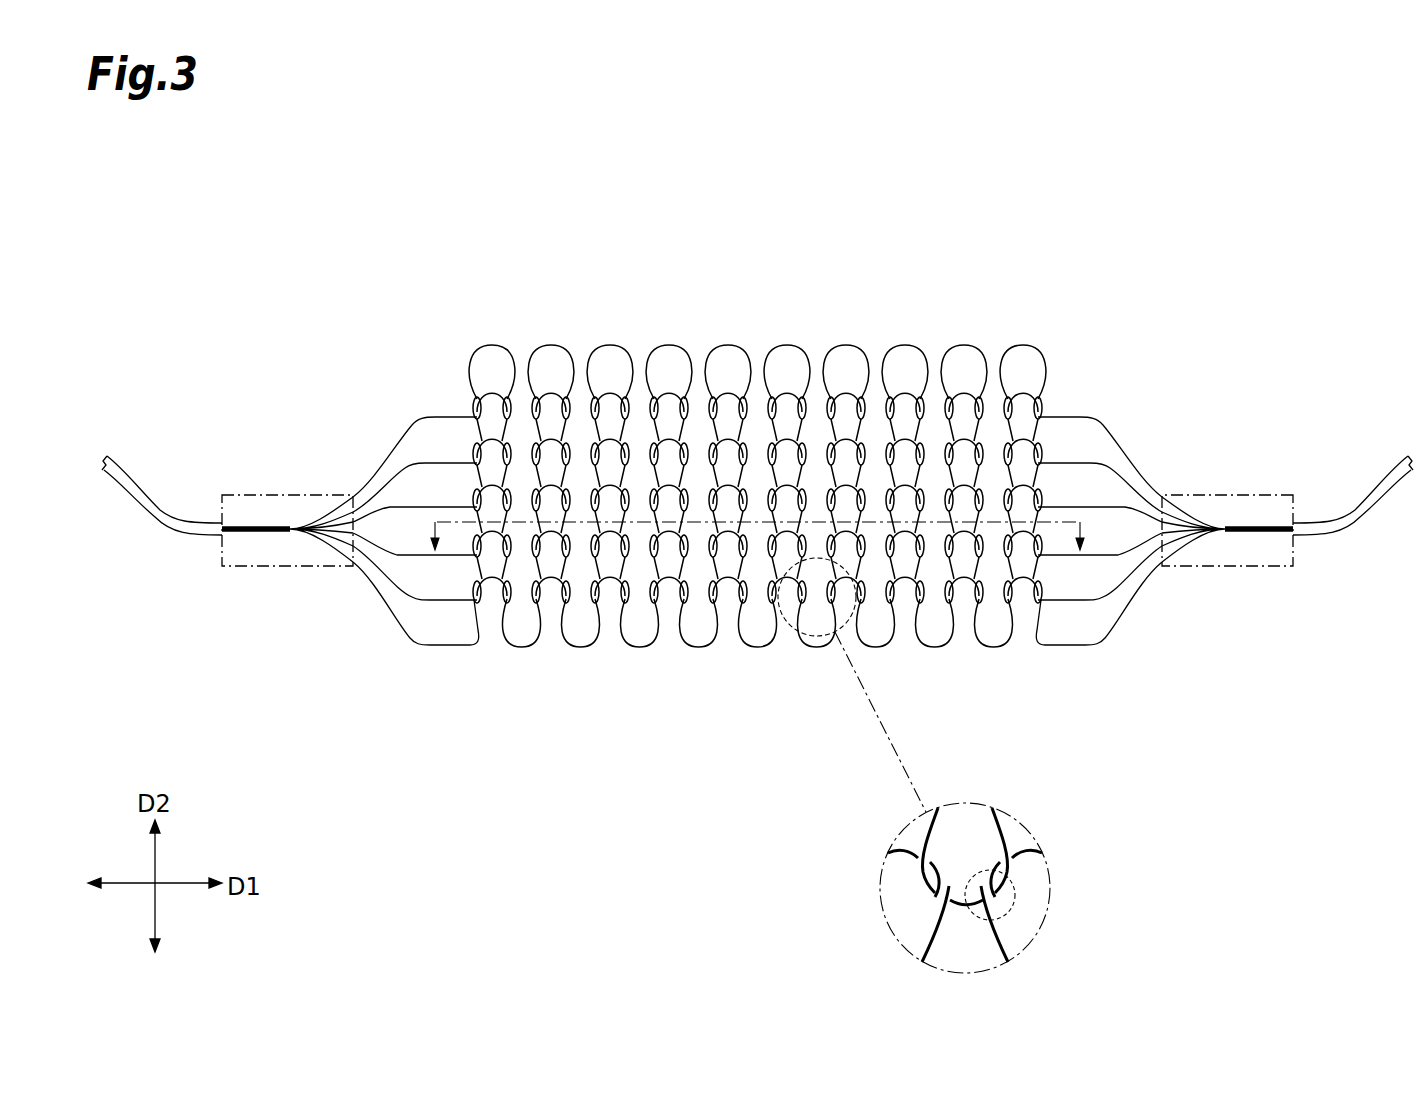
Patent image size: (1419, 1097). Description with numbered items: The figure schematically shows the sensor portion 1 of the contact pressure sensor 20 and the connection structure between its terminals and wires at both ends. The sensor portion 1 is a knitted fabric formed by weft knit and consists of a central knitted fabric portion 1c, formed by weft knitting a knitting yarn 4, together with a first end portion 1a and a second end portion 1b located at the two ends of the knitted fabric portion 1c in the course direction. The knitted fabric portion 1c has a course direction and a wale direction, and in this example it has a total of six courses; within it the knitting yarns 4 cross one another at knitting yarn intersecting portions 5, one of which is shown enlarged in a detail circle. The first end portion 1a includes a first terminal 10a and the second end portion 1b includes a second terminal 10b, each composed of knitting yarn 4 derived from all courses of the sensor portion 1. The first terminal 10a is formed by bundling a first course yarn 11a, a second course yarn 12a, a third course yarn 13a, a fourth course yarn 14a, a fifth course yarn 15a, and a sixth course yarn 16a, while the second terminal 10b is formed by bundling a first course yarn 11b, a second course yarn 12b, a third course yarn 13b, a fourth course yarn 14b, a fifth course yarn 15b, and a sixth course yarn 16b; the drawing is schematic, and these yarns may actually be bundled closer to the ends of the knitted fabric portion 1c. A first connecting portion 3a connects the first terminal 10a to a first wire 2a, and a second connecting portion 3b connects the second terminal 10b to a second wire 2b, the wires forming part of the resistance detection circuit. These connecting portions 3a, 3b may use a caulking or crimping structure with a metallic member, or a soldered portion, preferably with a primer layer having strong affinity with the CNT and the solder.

The contact pressure sensor 20 is at (1172, 169).
The sensor portion 1 is at (978, 234).
The first end portion 1a is at (321, 740).
The second end portion 1b is at (1196, 740).
The knitted fabric portion 1c is at (746, 740).
The first wire 2a is at (162, 534).
The second wire 2b is at (1353, 534).
The first connecting portion 3a is at (287, 533).
The second connecting portion 3b is at (1227, 533).
The knitting yarn 4 is at (848, 343).
The knitting yarn intersecting portion 5 is at (1013, 905).
The first terminal 10a is at (266, 583).
The second terminal 10b is at (1251, 583).
The first course yarn 11a is at (416, 647).
The second course yarn 12a is at (415, 657).
The third course yarn 13a is at (434, 633).
The fourth course yarn 14a is at (415, 415).
The fifth course yarn 15a is at (415, 429).
The sixth course yarn 16a is at (413, 402).
The first course yarn 11b is at (1099, 647).
The second course yarn 12b is at (1100, 657).
The third course yarn 13b is at (1085, 633).
The fourth course yarn 14b is at (1100, 415).
The fifth course yarn 15b is at (1100, 429).
The sixth course yarn 16b is at (1105, 402).